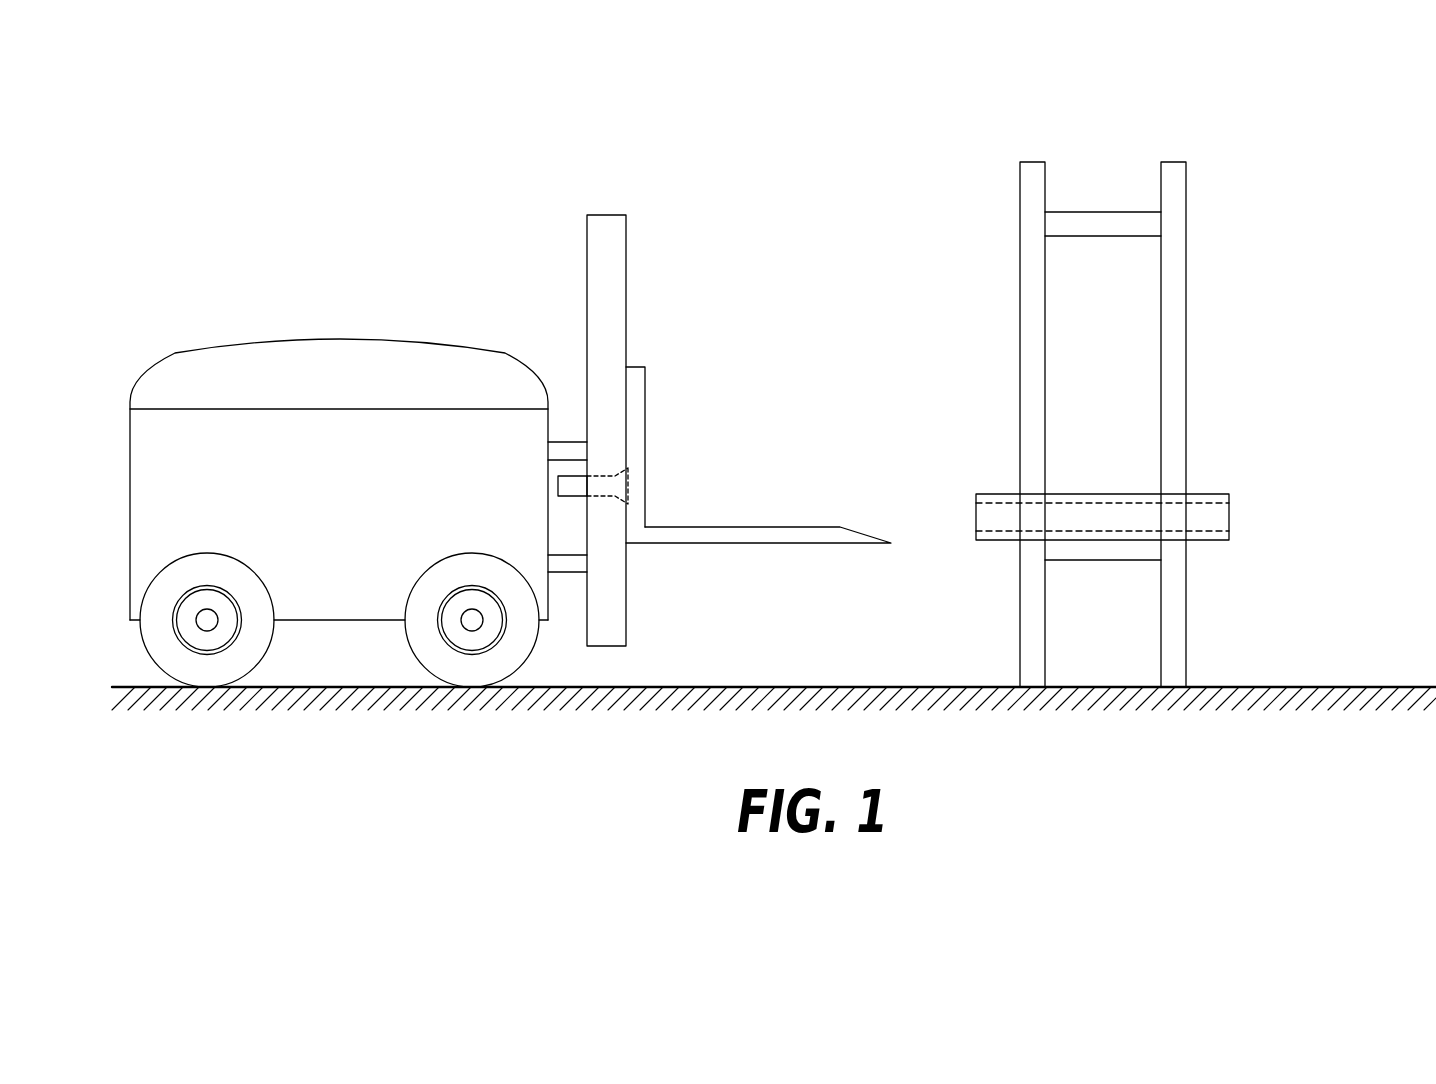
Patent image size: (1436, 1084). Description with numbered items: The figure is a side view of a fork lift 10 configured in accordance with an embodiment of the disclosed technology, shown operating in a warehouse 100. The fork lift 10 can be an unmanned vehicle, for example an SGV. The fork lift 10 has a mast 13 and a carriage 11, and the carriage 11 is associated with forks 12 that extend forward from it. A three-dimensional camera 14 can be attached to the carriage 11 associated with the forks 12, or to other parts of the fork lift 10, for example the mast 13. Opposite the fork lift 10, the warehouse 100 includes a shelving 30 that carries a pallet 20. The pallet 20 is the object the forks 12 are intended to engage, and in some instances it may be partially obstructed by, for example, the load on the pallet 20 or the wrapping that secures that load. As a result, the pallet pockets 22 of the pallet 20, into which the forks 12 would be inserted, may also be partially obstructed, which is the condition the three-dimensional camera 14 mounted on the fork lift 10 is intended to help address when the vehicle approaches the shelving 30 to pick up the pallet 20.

The warehouse 100 is at (876, 95).
The fork lift 10 is at (178, 354).
The carriage 11 is at (669, 430).
The forks 12 is at (745, 527).
The mast 13 is at (591, 263).
The 3D camera 14 is at (576, 474).
The pallet 20 is at (1211, 494).
The pallet pockets 22 is at (1207, 533).
The shelving 30 is at (1186, 237).